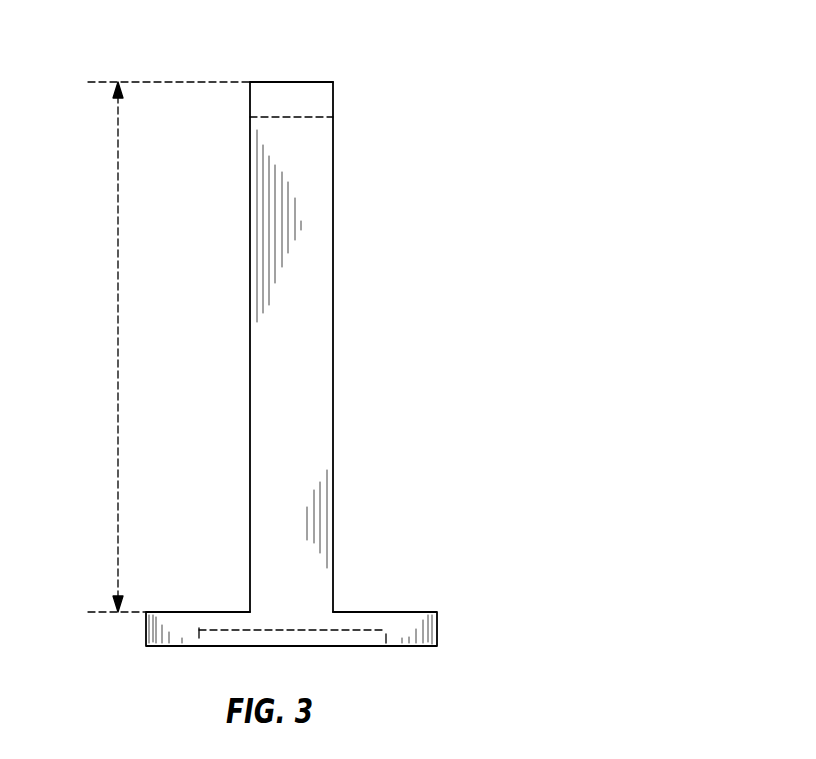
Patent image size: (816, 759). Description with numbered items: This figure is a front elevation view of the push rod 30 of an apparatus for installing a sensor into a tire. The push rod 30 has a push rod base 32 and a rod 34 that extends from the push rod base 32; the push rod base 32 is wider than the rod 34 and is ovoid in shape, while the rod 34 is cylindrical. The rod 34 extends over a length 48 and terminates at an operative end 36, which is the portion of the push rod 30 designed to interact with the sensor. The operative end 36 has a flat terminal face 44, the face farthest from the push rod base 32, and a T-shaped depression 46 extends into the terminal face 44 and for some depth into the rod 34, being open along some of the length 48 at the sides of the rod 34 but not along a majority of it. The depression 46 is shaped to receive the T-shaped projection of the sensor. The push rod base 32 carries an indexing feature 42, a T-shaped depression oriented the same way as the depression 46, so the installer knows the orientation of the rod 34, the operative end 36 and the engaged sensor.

The push rod 30 is at (271, 362).
The push rod base 32 is at (407, 617).
The rod 34 is at (327, 420).
The operative end 36 is at (317, 82).
The indexing feature 42 is at (290, 645).
The terminal face 44 is at (282, 82).
The depression 46 is at (257, 97).
The length 48 is at (118, 347).